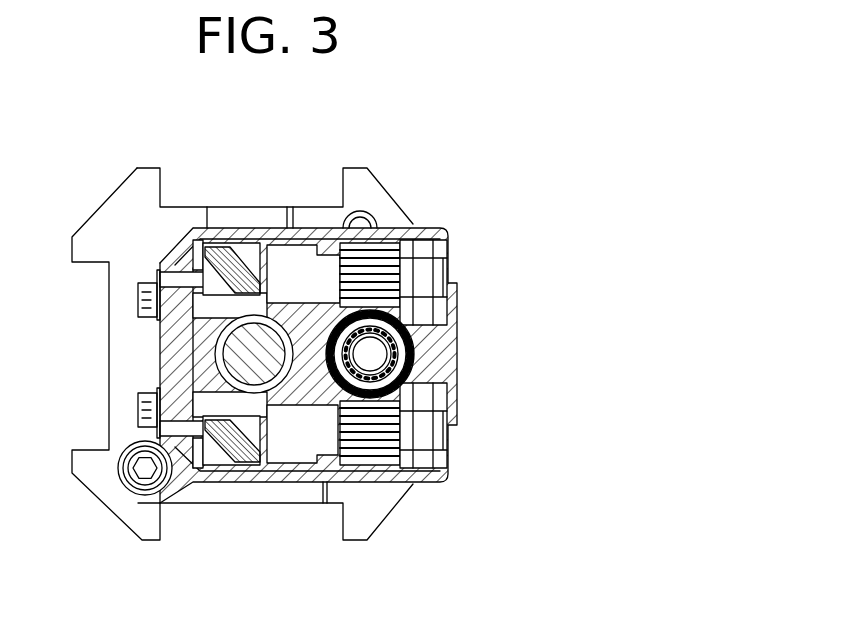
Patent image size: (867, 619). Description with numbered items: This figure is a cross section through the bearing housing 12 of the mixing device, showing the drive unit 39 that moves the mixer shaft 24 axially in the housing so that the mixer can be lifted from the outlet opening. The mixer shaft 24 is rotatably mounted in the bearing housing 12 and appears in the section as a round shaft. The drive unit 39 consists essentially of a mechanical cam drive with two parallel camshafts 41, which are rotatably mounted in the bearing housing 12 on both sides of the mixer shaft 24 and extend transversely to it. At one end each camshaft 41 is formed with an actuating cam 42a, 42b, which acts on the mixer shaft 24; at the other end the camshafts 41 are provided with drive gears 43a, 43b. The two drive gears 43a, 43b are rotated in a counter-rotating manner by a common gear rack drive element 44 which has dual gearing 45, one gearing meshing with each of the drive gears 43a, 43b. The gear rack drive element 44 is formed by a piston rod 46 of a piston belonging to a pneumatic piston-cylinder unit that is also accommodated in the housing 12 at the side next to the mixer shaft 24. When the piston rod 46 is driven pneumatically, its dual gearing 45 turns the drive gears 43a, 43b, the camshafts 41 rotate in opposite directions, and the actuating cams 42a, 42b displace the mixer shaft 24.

The bearing housing 12 is at (371, 520).
The mixer shaft 24 is at (243, 353).
The drive unit 39 is at (291, 320).
The camshaft 41 is at (285, 268).
The actuating cam 42a is at (232, 258).
The actuating cam 42b is at (232, 452).
The drive gear 43a is at (378, 266).
The drive gear 43b is at (382, 438).
The gear rack drive element 44 is at (335, 448).
The piston rod 46 is at (336, 396).
The dual gearing 45 is at (378, 306).